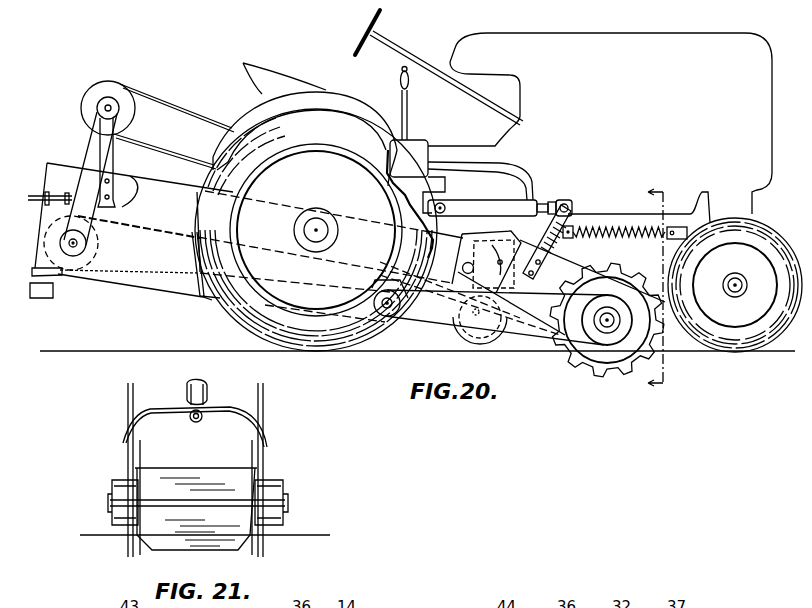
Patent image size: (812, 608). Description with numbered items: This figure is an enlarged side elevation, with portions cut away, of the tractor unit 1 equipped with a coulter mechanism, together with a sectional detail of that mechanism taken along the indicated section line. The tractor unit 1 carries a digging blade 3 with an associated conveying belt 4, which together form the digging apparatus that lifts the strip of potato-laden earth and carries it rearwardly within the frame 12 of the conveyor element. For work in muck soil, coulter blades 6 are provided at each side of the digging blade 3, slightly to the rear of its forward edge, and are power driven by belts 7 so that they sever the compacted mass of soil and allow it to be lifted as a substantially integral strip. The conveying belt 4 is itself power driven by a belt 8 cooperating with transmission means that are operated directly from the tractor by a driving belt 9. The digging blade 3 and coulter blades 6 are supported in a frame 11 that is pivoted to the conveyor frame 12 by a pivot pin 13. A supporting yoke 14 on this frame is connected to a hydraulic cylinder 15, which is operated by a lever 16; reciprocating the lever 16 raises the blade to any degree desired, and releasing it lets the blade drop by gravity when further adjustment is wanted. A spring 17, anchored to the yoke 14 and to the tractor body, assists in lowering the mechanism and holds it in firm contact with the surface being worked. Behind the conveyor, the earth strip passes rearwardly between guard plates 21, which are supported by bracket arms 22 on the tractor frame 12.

In FIG. 20, the tractor unit 1 is at (668, 33).
In FIG. 20, the digging blade 3 is at (634, 371).
In FIG. 21, the digging blade 3 is at (224, 541).
In FIG. 20, the conveying belt 4 is at (148, 233).
In FIG. 20, the coulter blades 6 is at (582, 358).
In FIG. 21, the coulter blades 6 is at (128, 544).
In FIG. 20, the belts 7 is at (528, 328).
In FIG. 20, the belt 8 is at (96, 148).
In FIG. 20, the driving belt 9 is at (152, 101).
In FIG. 20, the frame 11 is at (547, 320).
In FIG. 21, the frame 11 is at (263, 478).
In FIG. 20, the frame 12 is at (448, 262).
In FIG. 20, the pivot pin 13 is at (462, 252).
In FIG. 20, the supporting yoke 14 is at (553, 244).
In FIG. 21, the supporting yoke 14 is at (219, 408).
In FIG. 20, the hydraulic cylinder 15 is at (506, 198).
In FIG. 20, the lever 16 is at (413, 107).
In FIG. 20, the spring 17 is at (603, 225).
In FIG. 21, the spring 17 is at (190, 419).
In FIG. 20, the guard plates 21 is at (668, 288).
In FIG. 20, the bracket arms 22 is at (36, 196).